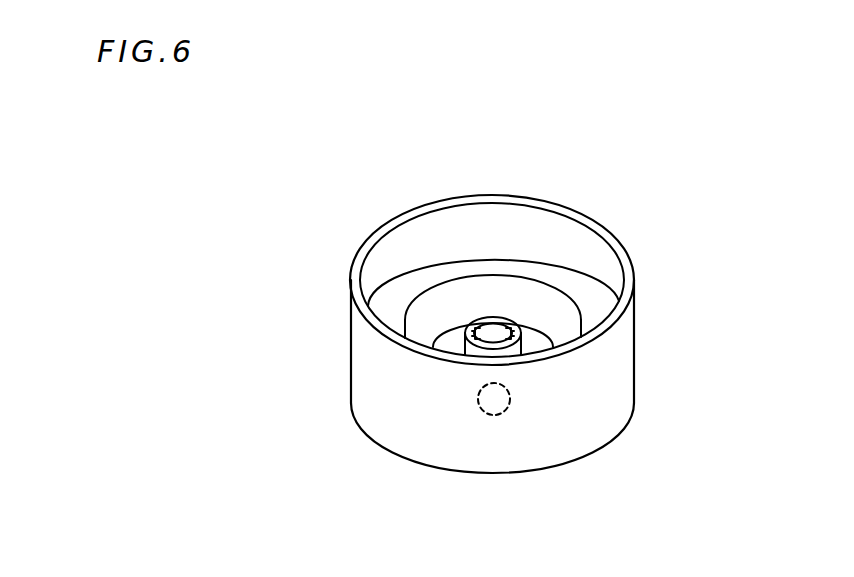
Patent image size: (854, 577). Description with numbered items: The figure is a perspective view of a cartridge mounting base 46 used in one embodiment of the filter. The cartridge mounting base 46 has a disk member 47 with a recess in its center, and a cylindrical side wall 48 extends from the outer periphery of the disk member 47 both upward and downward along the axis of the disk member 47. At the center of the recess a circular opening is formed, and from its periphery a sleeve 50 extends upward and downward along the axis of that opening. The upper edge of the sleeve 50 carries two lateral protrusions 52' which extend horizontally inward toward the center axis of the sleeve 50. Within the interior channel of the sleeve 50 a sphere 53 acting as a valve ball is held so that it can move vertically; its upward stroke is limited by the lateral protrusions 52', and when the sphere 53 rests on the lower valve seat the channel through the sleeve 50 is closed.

The cartridge mounting base 46 is at (698, 341).
The disk member 47 is at (497, 263).
The cylindrical side wall 48 is at (372, 368).
The sleeve 50 is at (527, 340).
The lateral protrusions 52' is at (494, 254).
The sphere 53 is at (503, 410).